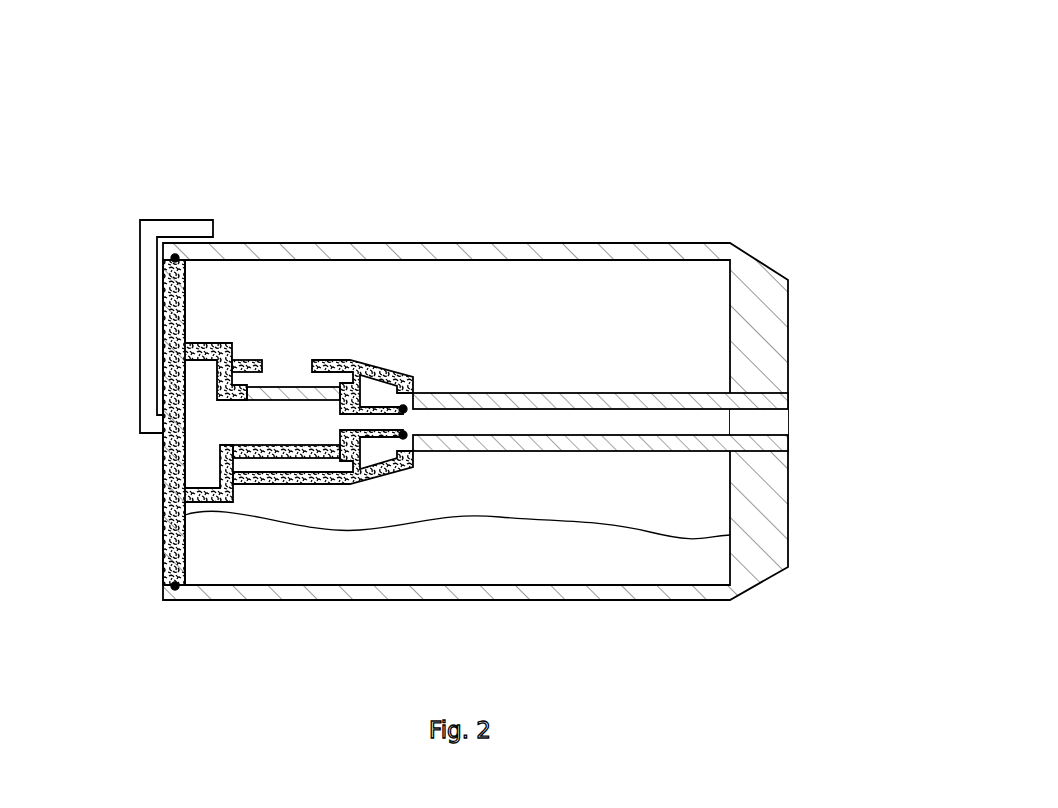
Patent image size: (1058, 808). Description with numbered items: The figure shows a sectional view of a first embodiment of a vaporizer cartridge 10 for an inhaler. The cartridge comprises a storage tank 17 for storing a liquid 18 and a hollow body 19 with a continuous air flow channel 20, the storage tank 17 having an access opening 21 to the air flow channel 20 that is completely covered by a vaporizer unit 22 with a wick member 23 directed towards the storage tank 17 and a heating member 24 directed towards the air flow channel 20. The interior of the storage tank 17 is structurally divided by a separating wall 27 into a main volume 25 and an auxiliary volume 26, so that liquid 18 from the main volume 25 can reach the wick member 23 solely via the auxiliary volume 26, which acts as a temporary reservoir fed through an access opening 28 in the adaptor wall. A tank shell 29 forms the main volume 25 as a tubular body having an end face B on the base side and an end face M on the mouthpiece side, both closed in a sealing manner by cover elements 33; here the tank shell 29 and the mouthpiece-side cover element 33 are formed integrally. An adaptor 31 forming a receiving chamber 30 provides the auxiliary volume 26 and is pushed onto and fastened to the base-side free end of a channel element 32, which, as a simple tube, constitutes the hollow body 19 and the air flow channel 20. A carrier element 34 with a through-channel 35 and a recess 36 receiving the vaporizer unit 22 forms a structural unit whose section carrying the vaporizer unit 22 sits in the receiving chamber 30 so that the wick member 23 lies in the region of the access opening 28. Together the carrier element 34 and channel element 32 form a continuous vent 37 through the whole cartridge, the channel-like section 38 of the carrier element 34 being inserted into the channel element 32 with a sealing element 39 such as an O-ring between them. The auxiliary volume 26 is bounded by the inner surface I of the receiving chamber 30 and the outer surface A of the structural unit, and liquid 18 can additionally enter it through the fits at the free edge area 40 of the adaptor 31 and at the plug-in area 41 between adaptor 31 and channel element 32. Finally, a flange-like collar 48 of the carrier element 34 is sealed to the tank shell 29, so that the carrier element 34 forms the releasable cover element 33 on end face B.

The vaporizer cartridge 10 is at (677, 157).
The storage tank 17 is at (557, 280).
The liquid 18 is at (372, 447).
The hollow body 19 is at (685, 402).
The air flow channel 20 is at (662, 418).
The access opening 21 is at (285, 367).
The vaporizer unit 22 is at (263, 403).
The wick member 23 is at (272, 360).
The heating member 24 is at (218, 389).
The main volume 25 is at (590, 316).
The auxiliary volume 26 is at (386, 400).
The separating wall 27 is at (388, 357).
The access opening 28 is at (265, 377).
The tank shell 29 is at (693, 252).
The receiving chamber 30 is at (266, 461).
The adaptor 31 is at (282, 487).
The channel element 32 is at (627, 393).
The cover element 33 is at (162, 529).
The carrier element 34 is at (307, 470).
The through-channel 35 is at (335, 460).
The recess 36 is at (336, 385).
The vent 37 is at (737, 417).
The channel-like section 38 is at (400, 385).
The sealing element 39 is at (407, 472).
The free edge area 40 is at (220, 472).
The plug-in area 41 is at (415, 390).
The flange-like collar 48 is at (163, 273).
The outer surface A is at (370, 385).
The end face on the base side B is at (120, 335).
The inner surface I is at (307, 383).
The end face on the mouthpiece side M is at (868, 388).